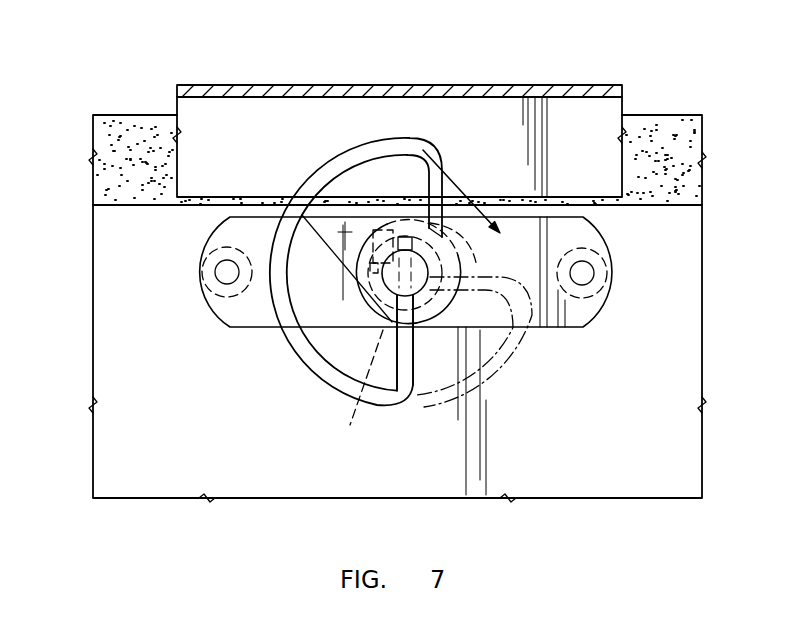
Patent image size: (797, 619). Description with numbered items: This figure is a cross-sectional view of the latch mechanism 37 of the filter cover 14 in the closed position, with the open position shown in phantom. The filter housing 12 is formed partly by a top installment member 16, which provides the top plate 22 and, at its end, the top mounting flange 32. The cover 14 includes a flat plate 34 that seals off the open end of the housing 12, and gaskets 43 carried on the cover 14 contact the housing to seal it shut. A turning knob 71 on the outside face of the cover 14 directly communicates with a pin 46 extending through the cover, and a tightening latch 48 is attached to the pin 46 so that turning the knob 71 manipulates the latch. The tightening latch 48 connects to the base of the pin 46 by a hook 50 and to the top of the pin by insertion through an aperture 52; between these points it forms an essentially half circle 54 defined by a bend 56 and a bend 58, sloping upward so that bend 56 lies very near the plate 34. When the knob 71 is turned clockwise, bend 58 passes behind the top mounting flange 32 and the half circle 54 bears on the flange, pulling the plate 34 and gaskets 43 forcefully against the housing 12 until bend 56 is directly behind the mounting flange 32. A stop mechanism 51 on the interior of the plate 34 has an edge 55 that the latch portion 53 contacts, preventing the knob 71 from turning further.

The filter housing 12 is at (571, 71).
The filter cover 14 is at (90, 298).
The top installment member 16 is at (609, 84).
The top plate 22 is at (510, 93).
The top mounting flange 32 is at (278, 133).
The flat plate 34 is at (680, 318).
The latch mechanism 37 is at (325, 417).
The gaskets 43 is at (130, 128).
The pin 46 is at (345, 302).
The tightening latch 48 is at (377, 147).
The hook 50 is at (312, 314).
The stop mechanism 51 is at (583, 237).
The aperture 52 is at (457, 260).
The latch portion 53 is at (434, 180).
The half circle 54 is at (275, 292).
The edge 55 is at (430, 211).
The bend 56 is at (298, 210).
The bend 58 is at (548, 328).
The turning knob 71 is at (372, 392).